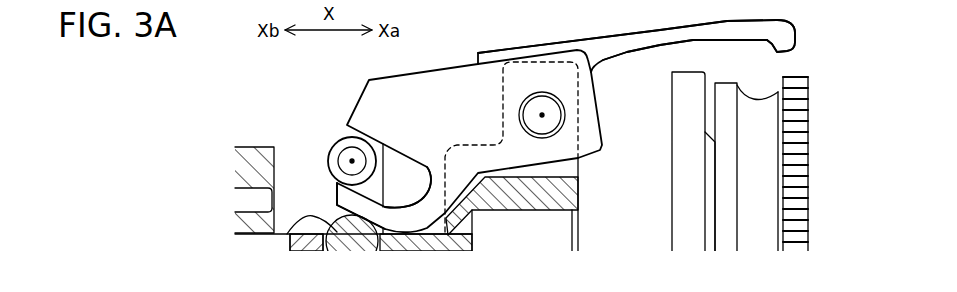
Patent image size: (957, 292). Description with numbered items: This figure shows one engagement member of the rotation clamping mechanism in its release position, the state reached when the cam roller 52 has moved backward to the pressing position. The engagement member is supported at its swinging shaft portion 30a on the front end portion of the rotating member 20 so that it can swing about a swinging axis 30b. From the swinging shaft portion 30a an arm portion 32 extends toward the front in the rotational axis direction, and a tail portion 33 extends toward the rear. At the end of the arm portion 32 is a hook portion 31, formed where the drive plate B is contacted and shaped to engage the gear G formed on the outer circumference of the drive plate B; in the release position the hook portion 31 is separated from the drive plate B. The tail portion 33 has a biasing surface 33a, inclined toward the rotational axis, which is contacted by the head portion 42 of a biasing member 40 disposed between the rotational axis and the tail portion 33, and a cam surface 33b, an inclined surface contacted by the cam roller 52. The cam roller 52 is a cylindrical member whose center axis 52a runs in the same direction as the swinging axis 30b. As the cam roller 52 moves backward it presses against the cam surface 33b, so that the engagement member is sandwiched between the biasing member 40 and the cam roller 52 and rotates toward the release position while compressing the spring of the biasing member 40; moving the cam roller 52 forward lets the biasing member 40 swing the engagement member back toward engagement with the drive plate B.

The rotating member 20 is at (568, 193).
The swinging shaft portion 30a is at (555, 107).
The swinging axis 30b is at (542, 115).
The hook portion 31 is at (782, 50).
The arm portion 32 is at (695, 43).
The tail portion 33 is at (382, 80).
The biasing surface 33a is at (330, 213).
The cam surface 33b is at (364, 192).
The biasing member 40 is at (352, 245).
The head portion 42 is at (285, 236).
The cam roller 52 is at (338, 144).
The center axis 52a is at (350, 160).
The gear G is at (805, 110).
The drive plate B is at (770, 172).